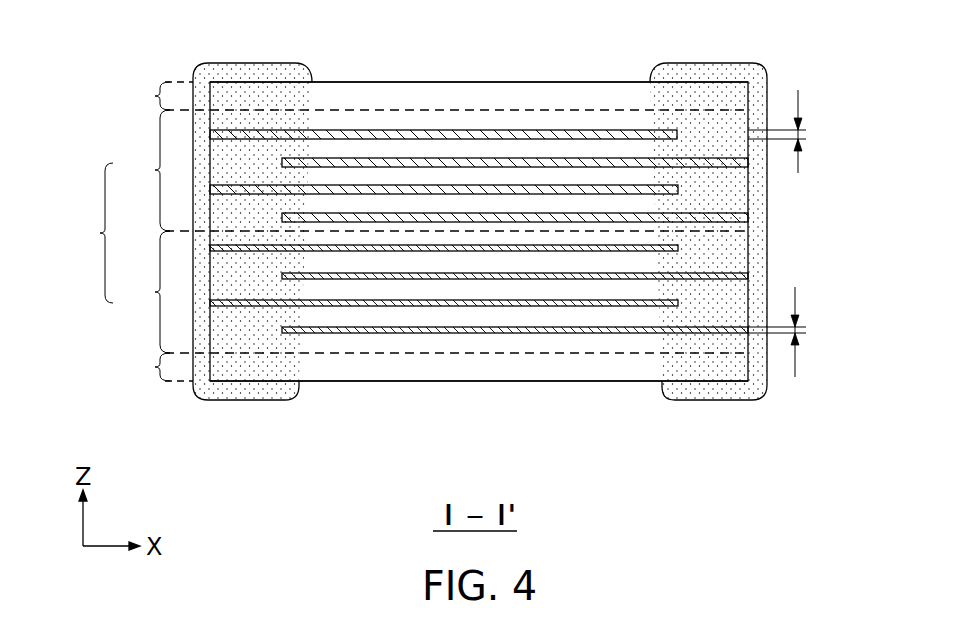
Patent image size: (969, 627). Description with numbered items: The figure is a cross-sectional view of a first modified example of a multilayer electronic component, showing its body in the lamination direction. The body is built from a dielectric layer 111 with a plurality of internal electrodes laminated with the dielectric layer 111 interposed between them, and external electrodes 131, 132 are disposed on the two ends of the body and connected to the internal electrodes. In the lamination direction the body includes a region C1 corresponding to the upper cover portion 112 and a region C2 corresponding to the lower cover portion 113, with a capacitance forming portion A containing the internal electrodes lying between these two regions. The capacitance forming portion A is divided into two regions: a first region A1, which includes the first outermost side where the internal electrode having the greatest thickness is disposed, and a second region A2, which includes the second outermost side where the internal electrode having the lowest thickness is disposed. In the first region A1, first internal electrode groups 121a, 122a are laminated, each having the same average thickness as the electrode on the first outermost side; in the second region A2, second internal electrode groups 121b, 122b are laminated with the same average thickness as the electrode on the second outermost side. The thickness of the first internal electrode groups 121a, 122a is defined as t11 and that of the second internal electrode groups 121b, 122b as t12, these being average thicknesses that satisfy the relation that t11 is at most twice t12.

The dielectric layer 111 is at (730, 193).
The upper cover portion 112 is at (486, 87).
The lower cover portion 113 is at (514, 368).
The first internal electrode group 121a is at (365, 129).
The first internal electrode group 122a is at (597, 157).
The second internal electrode group 121b is at (367, 307).
The second internal electrode group 122b is at (598, 334).
The external electrode 131 is at (245, 392).
The external electrode 132 is at (718, 393).
The thickness of first internal electrode groups t11 is at (798, 131).
The thickness of second internal electrode groups t12 is at (797, 332).
The region corresponding to upper cover portion C1 is at (142, 98).
The region corresponding to lower cover portion C2 is at (142, 368).
The capacitance forming portion A is at (96, 233).
The first region A1 is at (144, 170).
The second region A2 is at (144, 292).